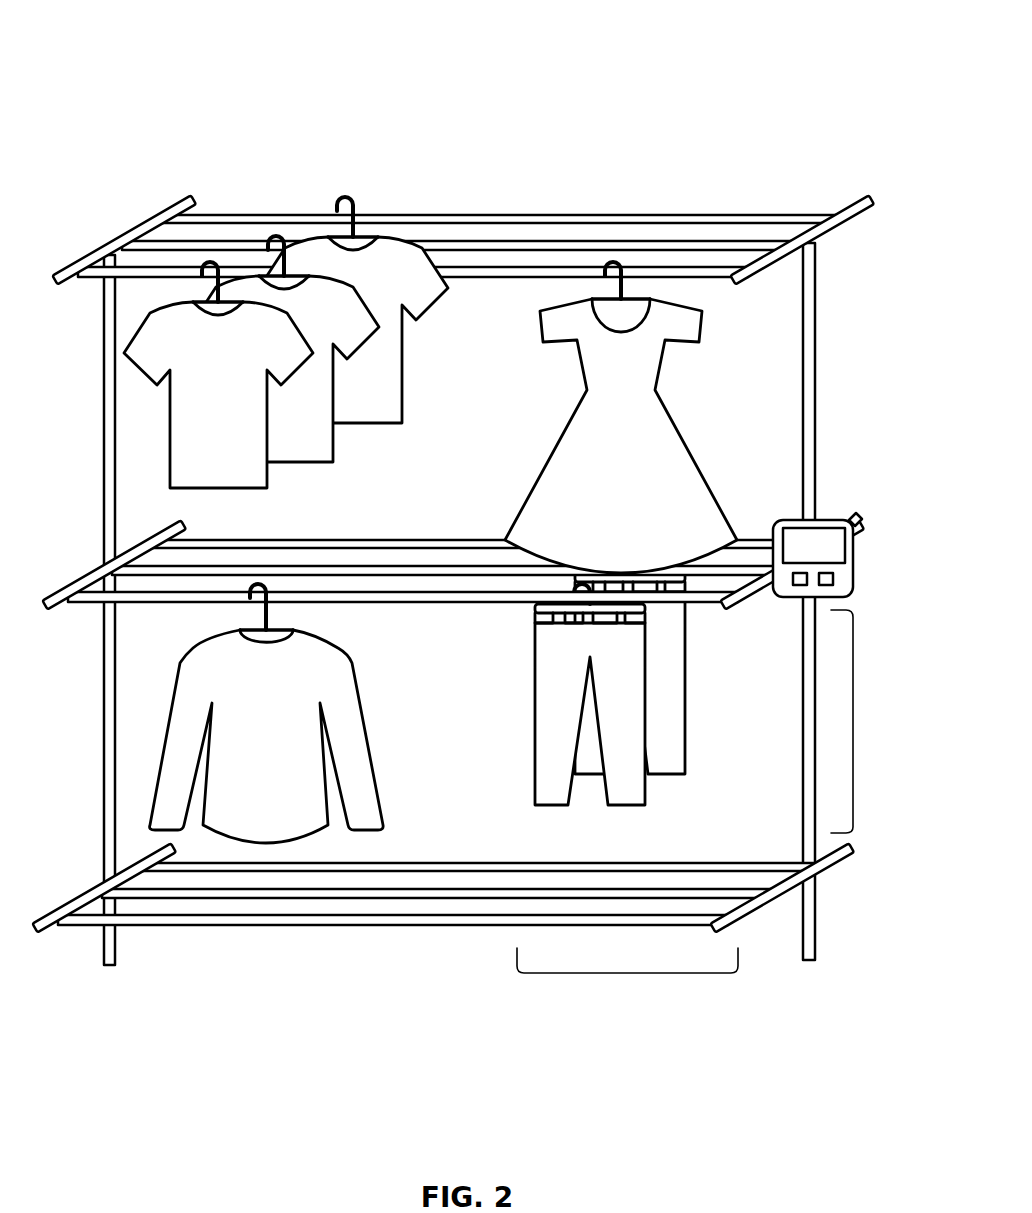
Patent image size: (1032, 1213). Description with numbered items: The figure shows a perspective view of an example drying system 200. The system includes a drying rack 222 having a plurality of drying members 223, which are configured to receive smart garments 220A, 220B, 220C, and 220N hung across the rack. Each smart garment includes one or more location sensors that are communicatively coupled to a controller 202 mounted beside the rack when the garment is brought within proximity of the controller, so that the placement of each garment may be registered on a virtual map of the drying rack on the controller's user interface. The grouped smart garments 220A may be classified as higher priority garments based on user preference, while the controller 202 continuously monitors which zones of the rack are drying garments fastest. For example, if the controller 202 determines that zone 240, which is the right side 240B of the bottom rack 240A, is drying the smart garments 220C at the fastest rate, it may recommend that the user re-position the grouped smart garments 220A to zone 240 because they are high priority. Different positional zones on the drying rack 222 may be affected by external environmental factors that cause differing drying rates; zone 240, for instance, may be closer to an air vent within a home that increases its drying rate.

The drying system 200 is at (154, 76).
The controller 202 is at (838, 522).
The smart garment 220A is at (150, 352).
The smart garment 220B is at (597, 353).
The smart garment 220C is at (560, 705).
The smart garment 220N is at (180, 725).
The drying rack 222 is at (120, 243).
The drying members 223 is at (753, 217).
The zone 240 is at (721, 770).
The bottom rack 240A is at (853, 720).
The right side 240B is at (628, 973).